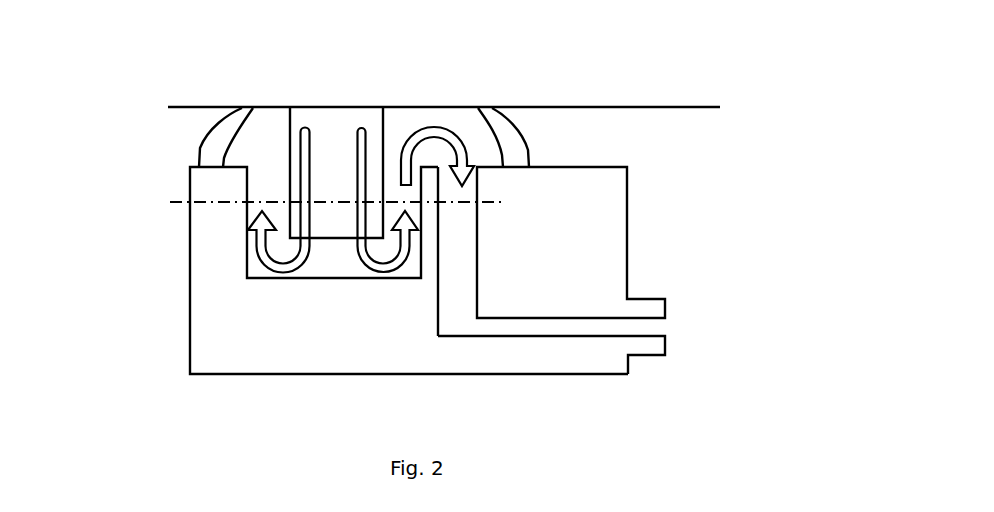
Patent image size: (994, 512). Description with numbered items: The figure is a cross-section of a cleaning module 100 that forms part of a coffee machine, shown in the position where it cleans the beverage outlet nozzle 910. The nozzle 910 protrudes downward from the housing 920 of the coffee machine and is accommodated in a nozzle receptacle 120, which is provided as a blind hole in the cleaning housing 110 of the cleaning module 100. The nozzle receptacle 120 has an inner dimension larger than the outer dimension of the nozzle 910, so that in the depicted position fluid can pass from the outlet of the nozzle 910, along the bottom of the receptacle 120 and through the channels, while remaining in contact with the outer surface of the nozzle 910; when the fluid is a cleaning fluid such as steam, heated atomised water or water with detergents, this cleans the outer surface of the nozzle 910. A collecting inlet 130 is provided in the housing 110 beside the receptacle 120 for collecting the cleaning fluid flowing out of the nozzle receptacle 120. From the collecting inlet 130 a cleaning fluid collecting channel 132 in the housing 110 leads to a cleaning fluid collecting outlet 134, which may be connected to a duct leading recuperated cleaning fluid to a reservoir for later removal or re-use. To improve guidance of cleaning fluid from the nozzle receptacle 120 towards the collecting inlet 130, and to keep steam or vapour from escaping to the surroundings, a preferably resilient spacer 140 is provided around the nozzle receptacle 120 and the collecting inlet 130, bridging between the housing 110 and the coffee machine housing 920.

The cleaning module 100 is at (682, 373).
The cleaning housing 110 is at (243, 322).
The nozzle receptacle 120 is at (253, 243).
The collecting inlet 130 is at (472, 176).
The cleaning fluid collecting channel 132 is at (463, 282).
The cleaning fluid collecting outlet 134 is at (667, 328).
The spacer 140 is at (213, 144).
The beverage outlet nozzle 910 is at (293, 152).
The housing 920 is at (227, 73).